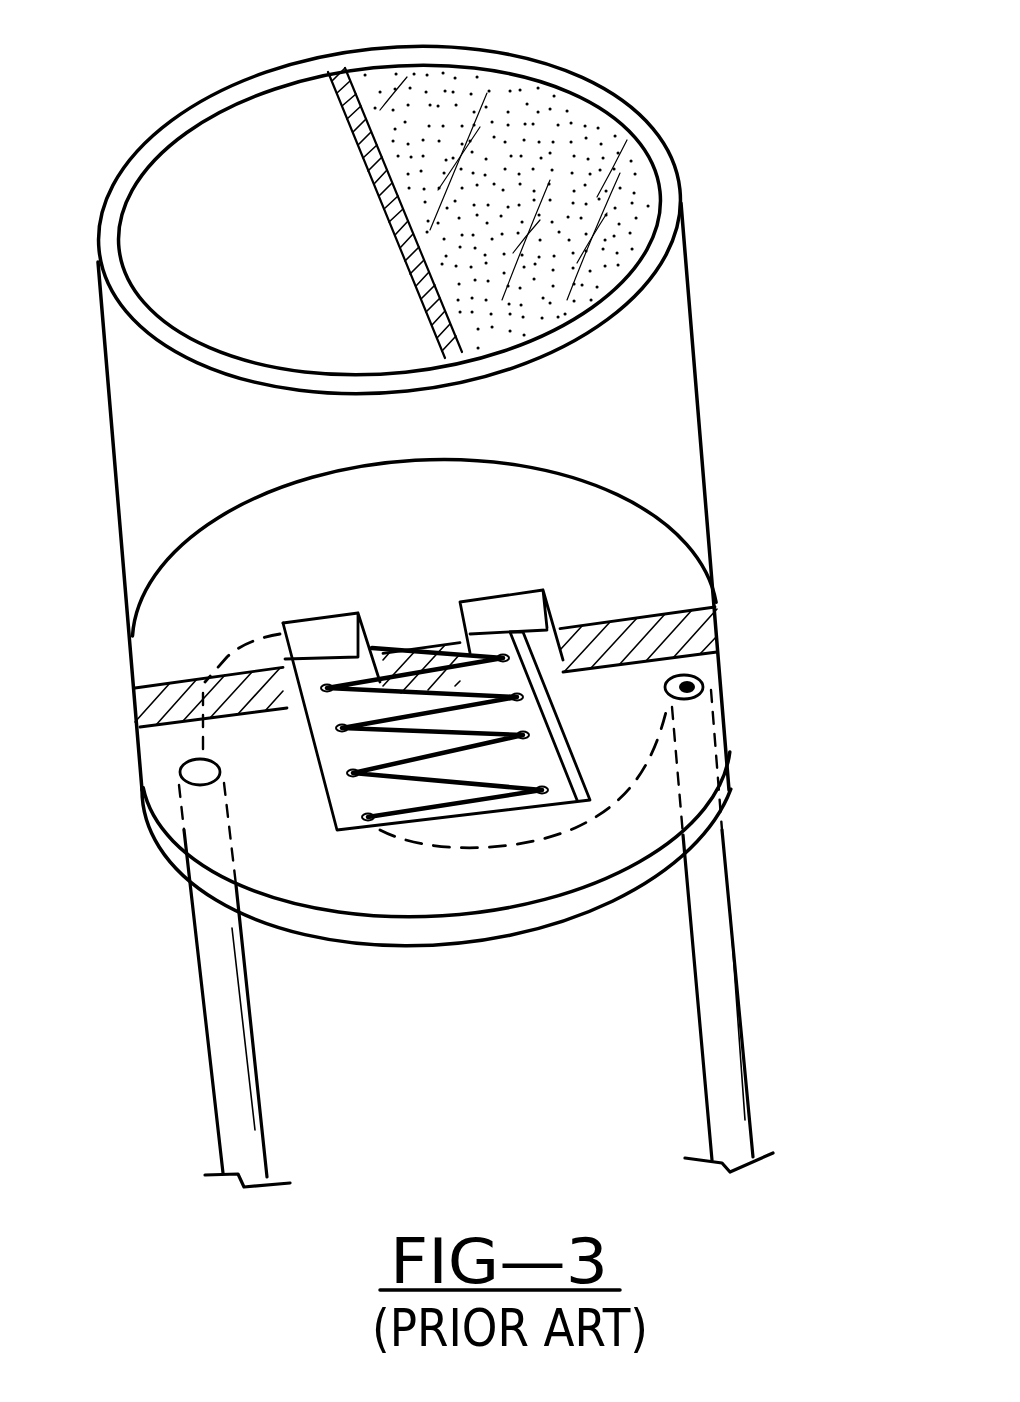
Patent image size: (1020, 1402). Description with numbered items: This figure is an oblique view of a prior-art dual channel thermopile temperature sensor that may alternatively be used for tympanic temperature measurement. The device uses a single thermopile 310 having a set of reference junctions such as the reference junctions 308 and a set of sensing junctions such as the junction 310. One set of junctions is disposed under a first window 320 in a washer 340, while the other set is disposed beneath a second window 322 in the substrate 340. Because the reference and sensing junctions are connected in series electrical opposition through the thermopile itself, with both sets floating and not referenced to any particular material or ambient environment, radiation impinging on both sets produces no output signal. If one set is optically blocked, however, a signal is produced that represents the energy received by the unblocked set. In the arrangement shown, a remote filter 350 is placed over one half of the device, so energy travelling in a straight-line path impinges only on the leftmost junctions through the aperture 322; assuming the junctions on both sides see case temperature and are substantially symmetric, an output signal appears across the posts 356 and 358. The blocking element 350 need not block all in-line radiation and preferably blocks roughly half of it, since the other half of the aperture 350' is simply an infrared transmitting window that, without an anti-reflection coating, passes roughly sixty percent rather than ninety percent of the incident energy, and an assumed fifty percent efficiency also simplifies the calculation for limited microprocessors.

The reference junctions 308 is at (530, 745).
The thermopile 310 is at (537, 578).
The first window 320 is at (561, 580).
The second window 322 is at (212, 643).
The washer 340 is at (618, 530).
The remote filter 350 is at (389, 211).
The aperture 350' is at (281, 184).
The post 356 is at (223, 1043).
The post 358 is at (718, 1023).